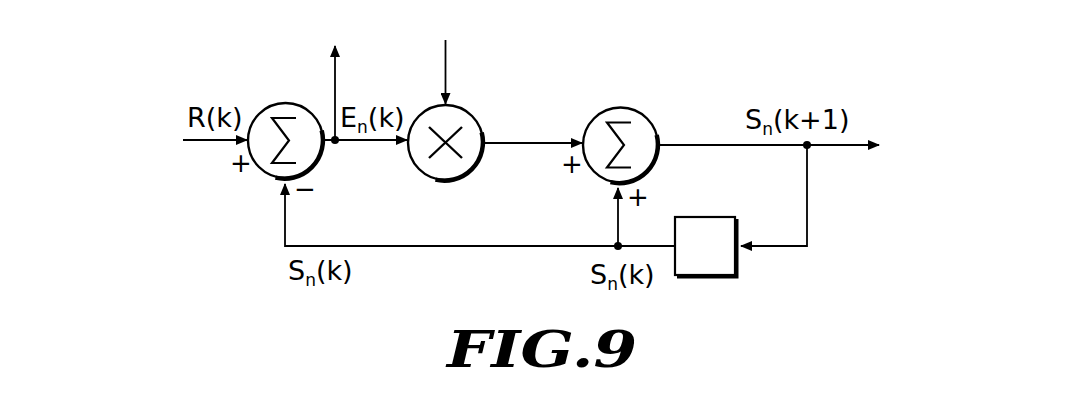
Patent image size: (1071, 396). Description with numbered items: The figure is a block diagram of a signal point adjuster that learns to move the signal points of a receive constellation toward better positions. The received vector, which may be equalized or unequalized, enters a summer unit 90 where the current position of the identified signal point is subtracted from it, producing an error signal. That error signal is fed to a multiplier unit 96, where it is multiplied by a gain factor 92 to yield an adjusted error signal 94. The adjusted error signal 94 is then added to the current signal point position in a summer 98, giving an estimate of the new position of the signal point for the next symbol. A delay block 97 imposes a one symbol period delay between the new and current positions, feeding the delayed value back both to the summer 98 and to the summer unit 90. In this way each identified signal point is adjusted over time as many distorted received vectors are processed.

The summer unit 90 is at (323, 153).
The gain factor 92 is at (484, 12).
The adjusted error signal 94 is at (503, 143).
The multiplier unit 96 is at (478, 168).
The delay block 97 is at (705, 217).
The summer 98 is at (636, 110).